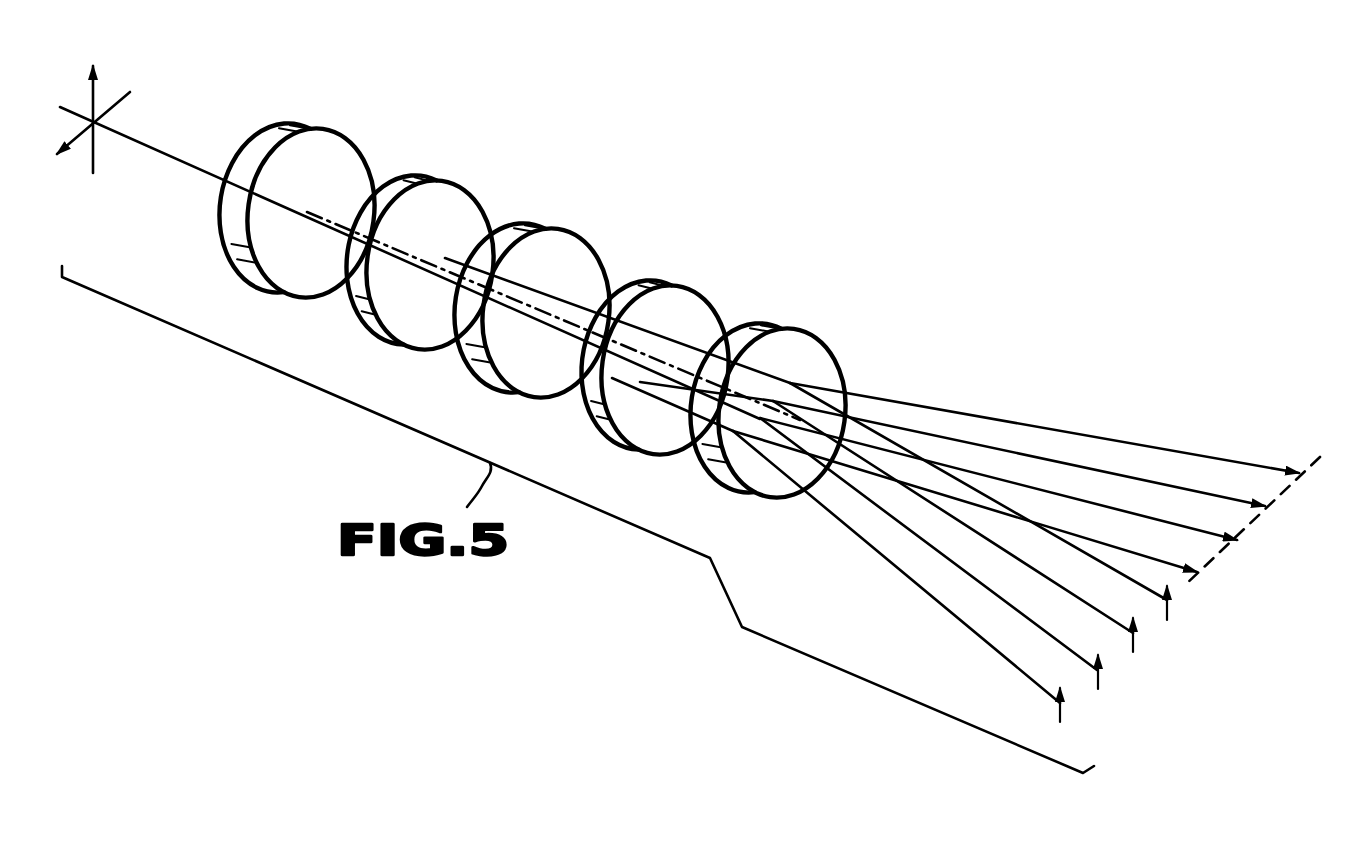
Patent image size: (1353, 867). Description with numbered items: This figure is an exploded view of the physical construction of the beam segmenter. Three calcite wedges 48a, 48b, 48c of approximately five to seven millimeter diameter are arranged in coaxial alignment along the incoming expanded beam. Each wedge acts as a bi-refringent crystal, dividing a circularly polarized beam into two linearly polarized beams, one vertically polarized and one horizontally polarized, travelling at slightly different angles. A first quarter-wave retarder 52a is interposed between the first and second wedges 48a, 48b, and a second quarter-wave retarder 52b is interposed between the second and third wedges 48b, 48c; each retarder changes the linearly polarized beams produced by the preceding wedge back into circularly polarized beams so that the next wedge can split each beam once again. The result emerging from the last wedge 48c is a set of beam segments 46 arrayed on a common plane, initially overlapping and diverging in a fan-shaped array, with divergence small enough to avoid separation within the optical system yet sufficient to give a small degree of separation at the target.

The calcite wedge 48a is at (332, 128).
The first ¼ wave retarder 52a is at (455, 182).
The calcite wedge 48b is at (573, 233).
The second ¼ wave retarder 52b is at (697, 283).
The calcite wedge 48c is at (807, 327).
The beam segments 46 is at (1053, 425).